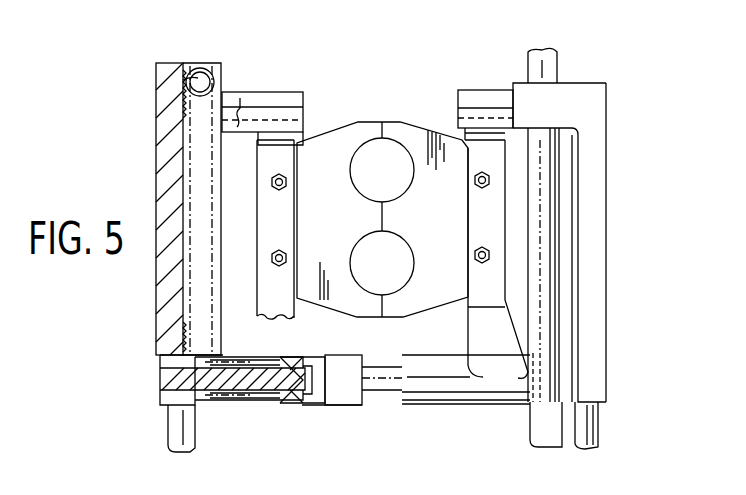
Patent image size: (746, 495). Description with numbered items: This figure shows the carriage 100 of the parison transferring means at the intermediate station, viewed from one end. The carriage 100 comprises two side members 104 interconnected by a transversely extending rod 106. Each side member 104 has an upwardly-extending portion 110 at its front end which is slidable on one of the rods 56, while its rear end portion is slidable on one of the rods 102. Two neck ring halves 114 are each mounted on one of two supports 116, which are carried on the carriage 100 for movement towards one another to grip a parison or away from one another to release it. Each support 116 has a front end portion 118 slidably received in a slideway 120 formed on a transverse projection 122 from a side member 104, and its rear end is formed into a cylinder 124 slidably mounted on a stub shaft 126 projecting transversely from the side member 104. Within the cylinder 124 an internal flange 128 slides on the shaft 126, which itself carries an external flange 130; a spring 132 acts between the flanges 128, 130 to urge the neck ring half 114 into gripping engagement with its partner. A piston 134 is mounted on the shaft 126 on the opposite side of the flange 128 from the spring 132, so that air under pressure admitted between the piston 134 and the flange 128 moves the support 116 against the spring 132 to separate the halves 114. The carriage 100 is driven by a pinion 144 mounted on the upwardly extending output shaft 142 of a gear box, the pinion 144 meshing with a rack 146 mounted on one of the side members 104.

The rod 56 is at (548, 438).
The carriage 100 is at (620, 334).
The rod 102 is at (172, 435).
The side member 104 is at (170, 297).
The rod 106 is at (385, 372).
The upwardly-extending portion 110 is at (556, 95).
The neck ring half 114 is at (412, 132).
The support 116 is at (296, 222).
The front end portion 118 is at (258, 137).
The slideway 120 is at (238, 98).
The transverse projection 122 is at (282, 98).
The cylinder 124 is at (462, 388).
The stub shaft 126 is at (278, 378).
The internal flange 128 is at (305, 358).
The external flange 130 is at (202, 397).
The spring 132 is at (252, 398).
The piston 134 is at (310, 400).
The output shaft 142 is at (182, 79).
The pinion 144 is at (200, 65).
The rack 146 is at (180, 95).